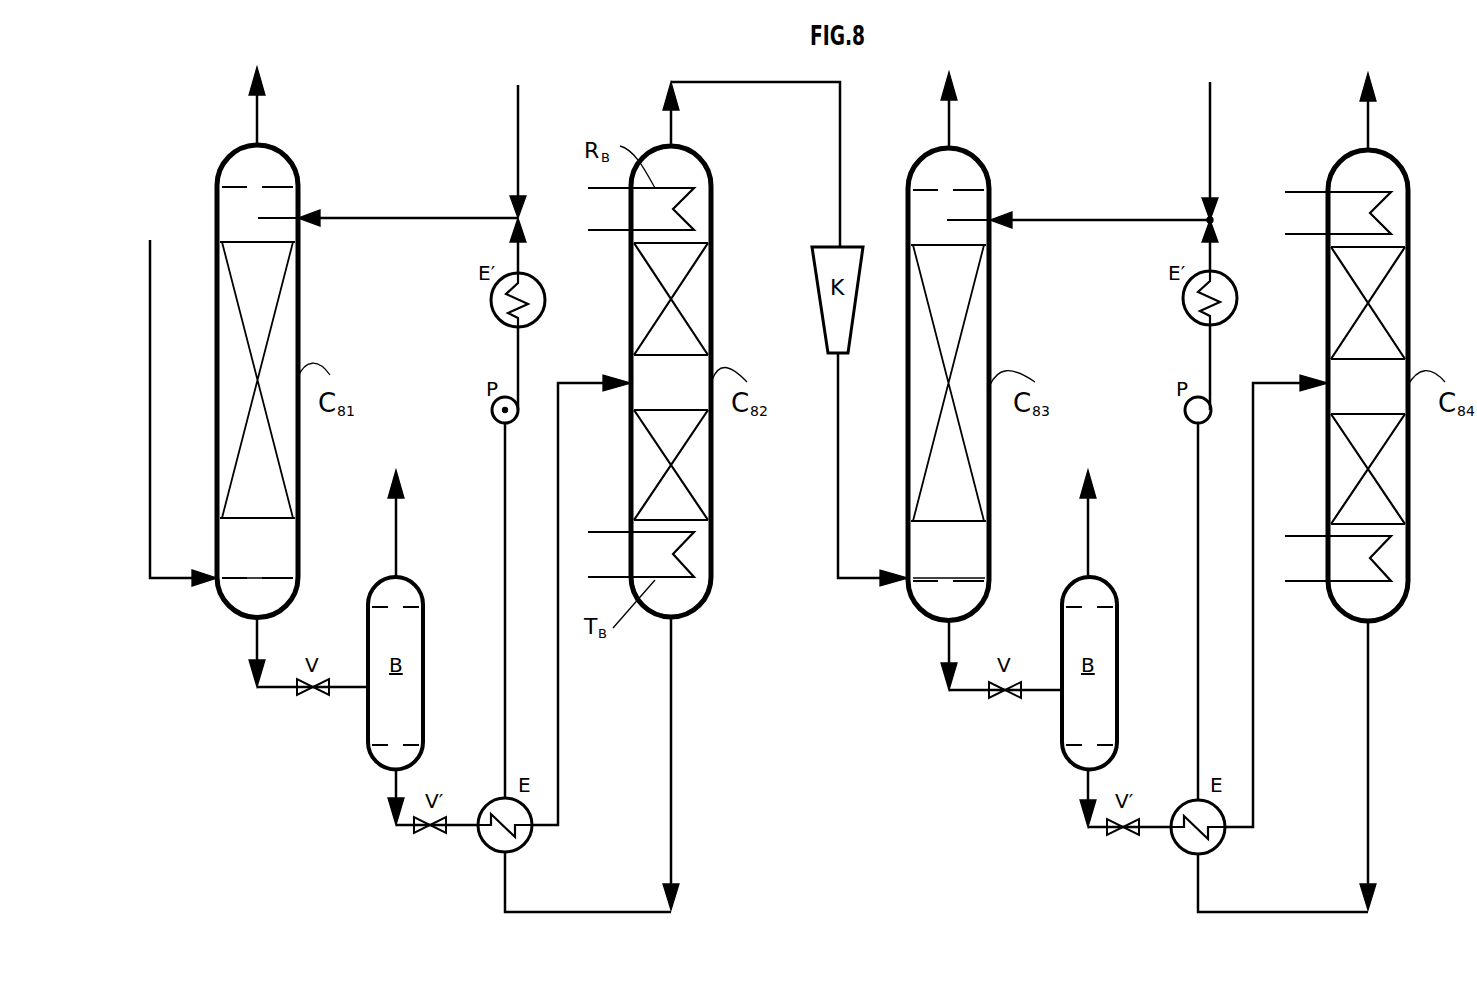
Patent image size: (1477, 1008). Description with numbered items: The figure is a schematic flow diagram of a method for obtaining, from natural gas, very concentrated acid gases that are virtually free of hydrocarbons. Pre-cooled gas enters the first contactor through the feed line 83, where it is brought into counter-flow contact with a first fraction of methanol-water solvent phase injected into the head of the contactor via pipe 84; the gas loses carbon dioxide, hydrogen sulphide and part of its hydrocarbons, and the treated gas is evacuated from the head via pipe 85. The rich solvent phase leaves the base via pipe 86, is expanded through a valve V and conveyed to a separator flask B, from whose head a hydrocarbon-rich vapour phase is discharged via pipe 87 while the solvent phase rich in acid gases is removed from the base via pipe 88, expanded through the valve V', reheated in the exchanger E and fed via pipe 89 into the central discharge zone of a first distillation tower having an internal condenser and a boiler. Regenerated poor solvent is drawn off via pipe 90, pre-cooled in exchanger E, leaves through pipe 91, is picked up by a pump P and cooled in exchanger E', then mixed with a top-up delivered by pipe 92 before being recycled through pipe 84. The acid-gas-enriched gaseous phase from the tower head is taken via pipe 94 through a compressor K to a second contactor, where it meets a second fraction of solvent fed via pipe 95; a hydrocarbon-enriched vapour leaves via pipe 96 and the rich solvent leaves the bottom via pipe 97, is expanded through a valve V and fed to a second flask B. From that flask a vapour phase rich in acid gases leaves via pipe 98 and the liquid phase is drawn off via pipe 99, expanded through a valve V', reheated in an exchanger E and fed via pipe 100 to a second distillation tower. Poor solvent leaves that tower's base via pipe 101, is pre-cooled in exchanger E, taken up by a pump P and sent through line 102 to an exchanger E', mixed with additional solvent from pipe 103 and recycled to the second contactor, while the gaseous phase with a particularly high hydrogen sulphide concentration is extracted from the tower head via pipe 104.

The feed line to column C81 83 is at (148, 560).
The pipe 84 is at (406, 218).
The pipe 85 is at (258, 113).
The pipe 86 is at (257, 645).
The pipe 87 is at (396, 517).
The pipe 88 is at (396, 787).
The pipe 89 is at (558, 695).
The pipe 90 is at (670, 797).
The pipe 91 is at (505, 550).
The pipe 92 is at (518, 126).
The pipe 94 is at (721, 86).
The pipe 95 is at (1087, 218).
The pipe 96 is at (950, 127).
The pipe 97 is at (948, 652).
The pipe 98 is at (1088, 522).
The pipe 99 is at (1087, 793).
The pipe 100 is at (1253, 643).
The pipe 101 is at (1364, 748).
The pump discharge line 102 is at (1195, 467).
The pipe 103 is at (1210, 113).
The pipe 104 is at (1370, 122).